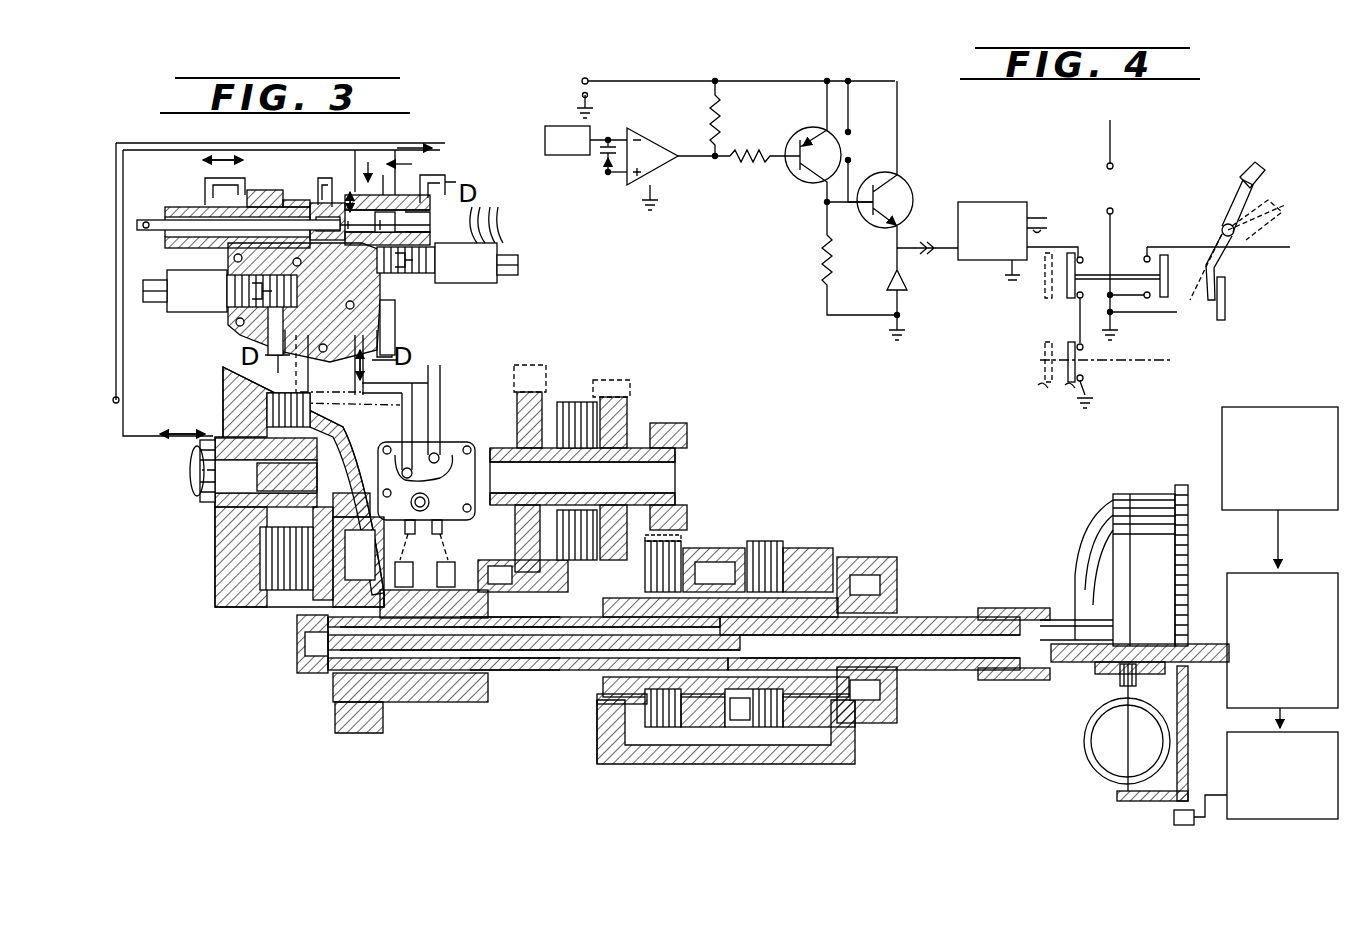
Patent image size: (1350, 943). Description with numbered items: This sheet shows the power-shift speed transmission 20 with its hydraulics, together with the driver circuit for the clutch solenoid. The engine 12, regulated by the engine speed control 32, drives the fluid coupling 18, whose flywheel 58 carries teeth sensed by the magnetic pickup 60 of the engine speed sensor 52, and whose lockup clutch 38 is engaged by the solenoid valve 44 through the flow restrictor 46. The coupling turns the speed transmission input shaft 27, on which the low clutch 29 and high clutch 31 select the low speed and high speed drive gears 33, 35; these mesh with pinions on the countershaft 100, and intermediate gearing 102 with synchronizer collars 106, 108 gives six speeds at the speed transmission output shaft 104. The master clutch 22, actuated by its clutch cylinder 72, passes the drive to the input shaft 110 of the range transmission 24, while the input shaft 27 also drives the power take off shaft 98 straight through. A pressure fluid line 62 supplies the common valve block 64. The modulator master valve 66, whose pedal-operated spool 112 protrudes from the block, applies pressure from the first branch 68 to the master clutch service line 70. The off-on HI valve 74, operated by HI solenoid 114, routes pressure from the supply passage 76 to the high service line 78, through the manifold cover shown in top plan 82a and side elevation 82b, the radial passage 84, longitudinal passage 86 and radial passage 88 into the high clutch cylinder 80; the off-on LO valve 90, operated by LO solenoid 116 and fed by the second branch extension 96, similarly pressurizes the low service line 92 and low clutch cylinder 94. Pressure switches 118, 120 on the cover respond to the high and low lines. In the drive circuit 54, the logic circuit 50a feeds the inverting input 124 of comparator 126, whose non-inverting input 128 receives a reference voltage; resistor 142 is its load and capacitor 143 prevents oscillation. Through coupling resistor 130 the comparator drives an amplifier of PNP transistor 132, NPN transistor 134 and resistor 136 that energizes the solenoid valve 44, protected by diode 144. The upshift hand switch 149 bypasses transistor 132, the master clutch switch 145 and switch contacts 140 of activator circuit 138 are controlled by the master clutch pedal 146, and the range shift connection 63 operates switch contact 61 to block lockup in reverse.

In FIG. 3, the engine 12 is at (1295, 573).
In FIG. 3, the fluid coupling 18 is at (1083, 540).
In FIG. 3, the speed transmission 20 is at (405, 703).
In FIG. 3, the master clutch 22 is at (280, 575).
In FIG. 3, the range transmission 24 is at (178, 510).
In FIG. 3, the speed transmission input shaft 27 is at (927, 660).
In FIG. 3, the low clutch 29 is at (775, 560).
In FIG. 3, the high clutch 31 is at (665, 555).
In FIG. 3, the engine speed control 32 is at (1265, 407).
In FIG. 3, the low speed drive gear 33 is at (828, 712).
In FIG. 3, the high speed drive gear 35 is at (605, 707).
In FIG. 3, the lockup clutch 38 is at (1175, 682).
In FIG. 4, the solenoid valve 44 is at (1012, 202).
In FIG. 4, the flow restrictor 46 is at (1035, 218).
In FIG. 4, the speed responsive logic circuit 50a is at (585, 140).
In FIG. 3, the engine speed sensor 52 is at (1227, 768).
In FIG. 4, the drive circuit 54 is at (700, 70).
In FIG. 3, the flywheel 58 is at (1178, 487).
In FIG. 3, the magnetic pickup 60 is at (1172, 819).
In FIG. 4, the switch contact 61 is at (1088, 382).
In FIG. 4, the range shift connection 63 is at (1175, 357).
In FIG. 3, the pressure fluid line 62 is at (383, 218).
In FIG. 3, the common valve block 64 is at (297, 182).
In FIG. 3, the modulator master valve 66 is at (405, 215).
In FIG. 3, the pressure fluid first branch 68 is at (353, 213).
In FIG. 3, the master clutch service line 70 is at (160, 145).
In FIG. 3, the master clutch cylinder 72 is at (240, 560).
In FIG. 3, the off-on HI valve 74 is at (362, 270).
In FIG. 3, the supply passage 76 is at (437, 260).
In FIG. 3, the high service line 78 is at (432, 380).
In FIG. 3, the high clutch cylinder 80 is at (675, 728).
In FIG. 3, the manifold cover (top plan) 82a is at (455, 445).
In FIG. 3, the manifold cover (side elevation) 82b is at (500, 630).
In FIG. 3, the radial passage 84 is at (445, 652).
In FIG. 3, the longitudinal passage 86 is at (575, 627).
In FIG. 3, the radial passage 88 is at (712, 562).
In FIG. 3, the off-on LO valve 90 is at (272, 262).
In FIG. 3, the low service line 92 is at (357, 440).
In FIG. 3, the low clutch cylinder 94 is at (730, 728).
In FIG. 3, the pressure fluid second branch extension 96 is at (312, 345).
In FIG. 3, the power take off shaft 98 is at (300, 660).
In FIG. 3, the countershaft 100 is at (612, 764).
In FIG. 3, the intermediate gearing 102 is at (540, 390).
In FIG. 3, the speed transmission output shaft 104 is at (510, 497).
In FIG. 3, the synchronizer collar 106 is at (577, 402).
In FIG. 3, the synchronizer collar 108 is at (485, 577).
In FIG. 3, the range transmission input shaft 110 is at (225, 490).
In FIG. 3, the spool 112 is at (150, 222).
In FIG. 3, the HI solenoid 114 is at (478, 284).
In FIG. 3, the LO solenoid 116 is at (190, 268).
In FIG. 3, the pressure switch 118 is at (462, 452).
In FIG. 3, the pressure switch 120 is at (430, 500).
In FIG. 4, the inverting input 124 is at (608, 135).
In FIG. 4, the comparator 126 is at (648, 142).
In FIG. 4, the non-inverting input 128 is at (608, 178).
In FIG. 4, the coupling resistor 130 is at (745, 150).
In FIG. 4, the PNP transistor 132 is at (826, 90).
In FIG. 4, the NPN transistor 134 is at (905, 182).
In FIG. 4, the resistor 136 is at (822, 247).
In FIG. 4, the activator circuit 138 is at (1163, 254).
In FIG. 4, the switch contacts 140 is at (1140, 257).
In FIG. 4, the load resistor 142 is at (725, 105).
In FIG. 4, the capacitor 143 is at (600, 165).
In FIG. 4, the transient protection diode 144 is at (905, 287).
In FIG. 4, the master clutch switch 145 is at (1078, 302).
In FIG. 4, the master clutch pedal 146 is at (1232, 207).
In FIG. 4, the upshift hand switch 149 is at (860, 157).